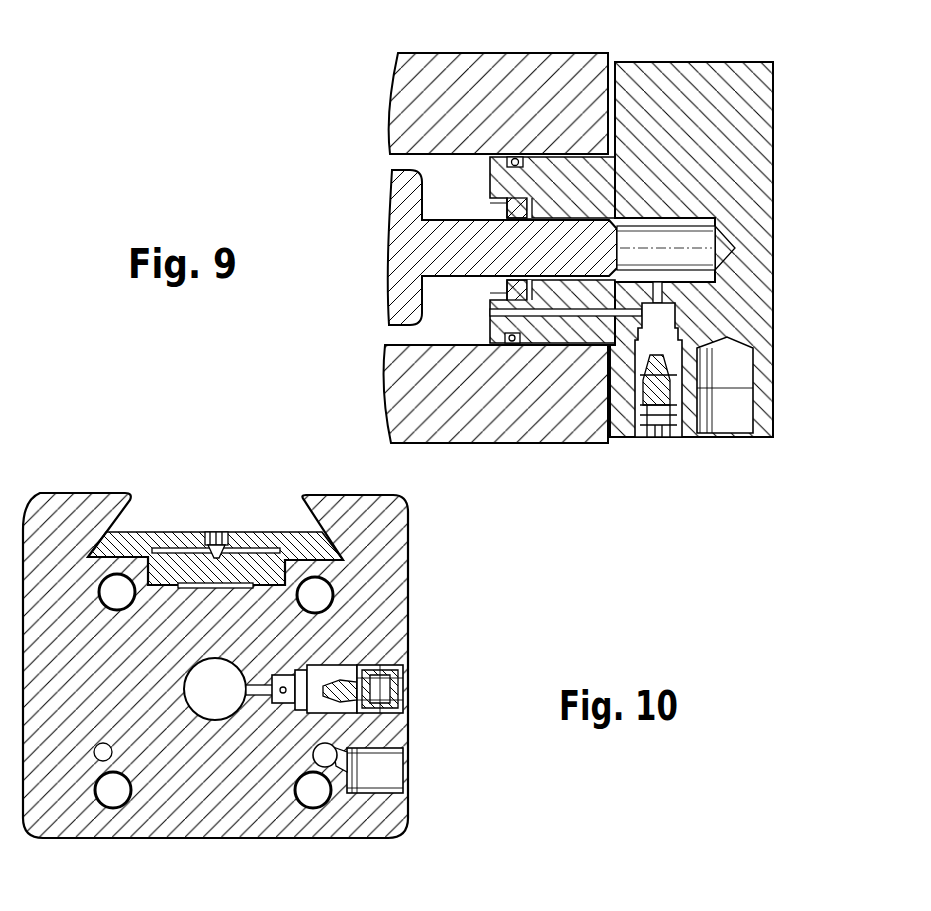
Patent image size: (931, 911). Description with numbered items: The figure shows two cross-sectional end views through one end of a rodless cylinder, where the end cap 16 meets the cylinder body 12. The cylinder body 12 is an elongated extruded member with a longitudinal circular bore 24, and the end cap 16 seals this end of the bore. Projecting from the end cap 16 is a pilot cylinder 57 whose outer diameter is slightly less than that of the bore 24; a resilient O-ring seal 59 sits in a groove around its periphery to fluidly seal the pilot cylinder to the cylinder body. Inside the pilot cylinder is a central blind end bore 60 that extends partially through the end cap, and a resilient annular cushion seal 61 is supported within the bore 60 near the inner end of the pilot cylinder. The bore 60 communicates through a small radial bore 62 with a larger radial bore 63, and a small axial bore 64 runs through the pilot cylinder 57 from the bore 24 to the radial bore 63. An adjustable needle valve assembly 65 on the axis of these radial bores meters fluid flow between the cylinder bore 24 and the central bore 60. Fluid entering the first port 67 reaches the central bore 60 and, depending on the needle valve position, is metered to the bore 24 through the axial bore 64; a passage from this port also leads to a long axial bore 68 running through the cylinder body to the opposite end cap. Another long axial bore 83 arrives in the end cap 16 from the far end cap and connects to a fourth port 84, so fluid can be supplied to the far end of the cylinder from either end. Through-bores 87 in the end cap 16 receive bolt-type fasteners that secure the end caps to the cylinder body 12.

In FIG. 9, the cylinder body 12 is at (568, 420).
In FIG. 9, the end cap 16 is at (722, 62).
In FIG. 10, the end cap 16 is at (408, 813).
In FIG. 9, the circular bore 24 is at (442, 298).
In FIG. 9, the pilot cylinder 57 is at (538, 178).
In FIG. 9, the O-ring seal 59 is at (518, 345).
In FIG. 9, the central blind end bore 60 is at (695, 258).
In FIG. 10, the central blind end bore 60 is at (212, 705).
In FIG. 9, the cushion seal 61 is at (512, 212).
In FIG. 9, the small radial bore 62 is at (658, 295).
In FIG. 10, the small radial bore 62 is at (252, 690).
In FIG. 9, the radial bore 63 is at (668, 360).
In FIG. 10, the radial bore 63 is at (320, 675).
In FIG. 9, the axial bore 64 is at (487, 315).
In FIG. 10, the axial bore 64 is at (221, 532).
In FIG. 9, the needle valve assembly 65 is at (676, 438).
In FIG. 10, the needle valve assembly 65 is at (400, 690).
In FIG. 9, the first port 67 is at (735, 415).
In FIG. 10, the axial bore 68 is at (95, 758).
In FIG. 10, the axial bore 83 is at (325, 757).
In FIG. 10, the fourth port 84 is at (388, 772).
In FIG. 10, the through-bores 87 is at (112, 588).